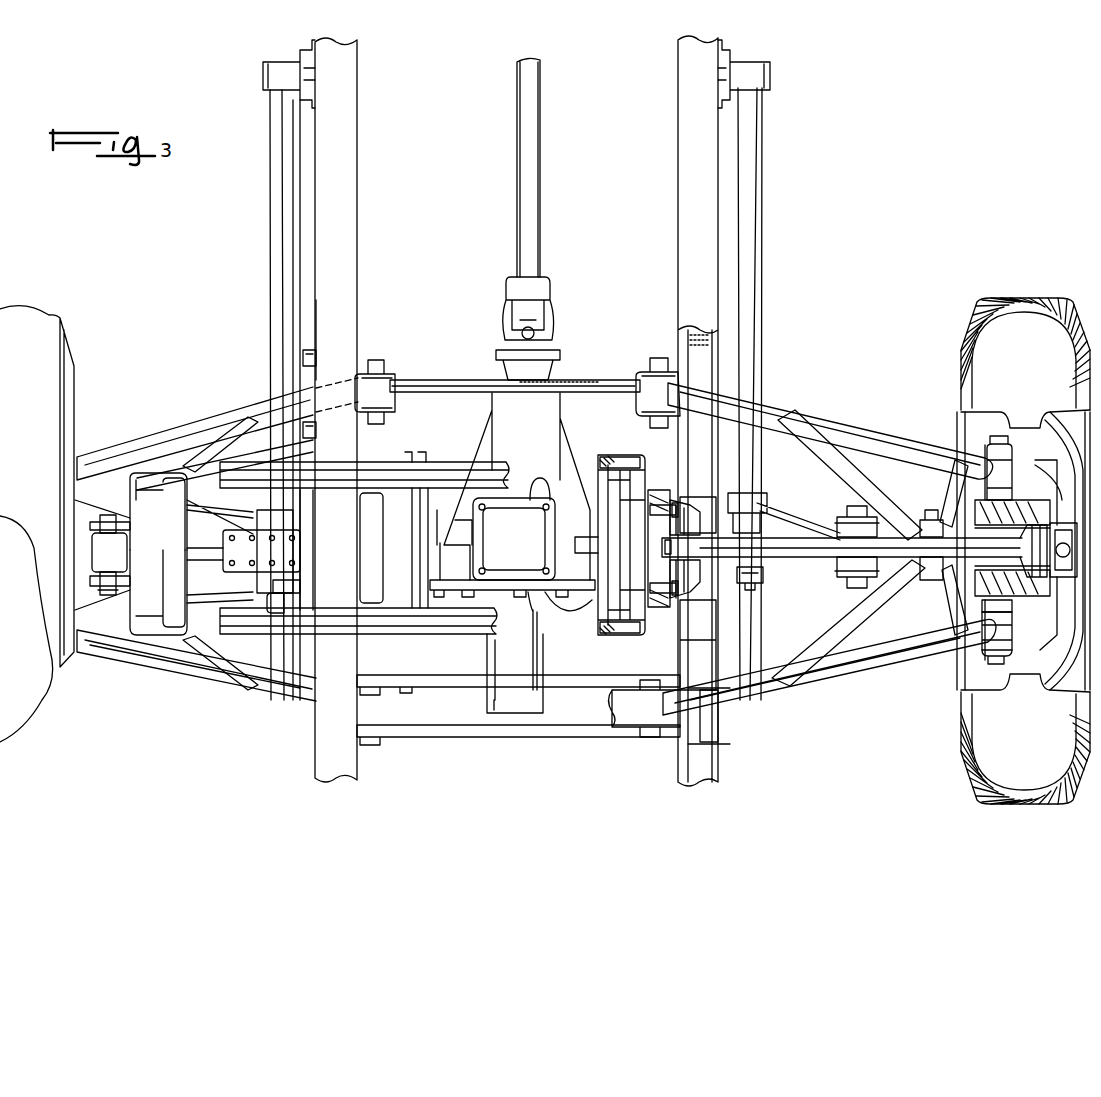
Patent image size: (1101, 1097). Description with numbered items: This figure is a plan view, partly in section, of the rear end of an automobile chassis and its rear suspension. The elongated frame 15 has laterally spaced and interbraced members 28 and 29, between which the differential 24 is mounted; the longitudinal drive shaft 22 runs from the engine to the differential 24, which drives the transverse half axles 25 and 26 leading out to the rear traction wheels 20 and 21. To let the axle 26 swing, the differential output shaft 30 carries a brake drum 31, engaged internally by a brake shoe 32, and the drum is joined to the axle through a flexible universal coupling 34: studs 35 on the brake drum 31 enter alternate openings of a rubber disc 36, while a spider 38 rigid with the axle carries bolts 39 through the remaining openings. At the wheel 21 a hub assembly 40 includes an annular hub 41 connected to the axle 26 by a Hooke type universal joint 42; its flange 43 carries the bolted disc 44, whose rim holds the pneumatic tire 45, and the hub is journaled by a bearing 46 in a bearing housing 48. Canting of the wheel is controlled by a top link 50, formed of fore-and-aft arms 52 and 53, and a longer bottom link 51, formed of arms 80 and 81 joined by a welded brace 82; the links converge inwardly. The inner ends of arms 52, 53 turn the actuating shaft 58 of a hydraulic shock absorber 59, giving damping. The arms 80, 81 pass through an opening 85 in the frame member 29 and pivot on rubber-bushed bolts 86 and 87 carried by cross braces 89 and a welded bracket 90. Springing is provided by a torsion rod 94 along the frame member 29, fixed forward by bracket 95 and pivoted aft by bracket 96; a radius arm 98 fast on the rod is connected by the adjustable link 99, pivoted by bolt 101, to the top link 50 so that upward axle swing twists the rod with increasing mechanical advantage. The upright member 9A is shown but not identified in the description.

The frame 15 is at (370, 82).
The frame member 28 is at (350, 345).
The frame member 29 is at (680, 294).
The bracket 95 is at (268, 76).
The upright strut 9A is at (270, 288).
The torsion rod 94 is at (762, 340).
The drive shaft 22 is at (540, 211).
The welded bracket 90 is at (590, 380).
The rubber-bushed bolt 87 is at (378, 386).
The differential 24 is at (492, 430).
The output shaft 30 is at (598, 545).
The brake drum 31 is at (624, 460).
The brake shoe 32 is at (642, 470).
The flexible universal coupling 34 is at (665, 490).
The studs 35 is at (678, 510).
The rubber disc 36 is at (684, 500).
The spider 38 is at (700, 570).
The bolts 39 is at (655, 600).
The half axle 26 is at (808, 558).
The bracket 96 is at (764, 572).
The radius arm 98 is at (785, 522).
The link 99 is at (850, 568).
The bolt 101 is at (858, 587).
The arm 81 is at (198, 428).
The arm 80 is at (167, 672).
The bottom link 51 is at (116, 680).
The welded brace 82 is at (238, 652).
The rear traction wheel 20 is at (57, 316).
The top link 50 is at (124, 514).
The arm 53 is at (196, 508).
The arm 52 is at (196, 598).
The half axle 25 is at (194, 566).
The hydraulic shock absorber 59 is at (300, 592).
The actuating shaft 58 is at (274, 613).
The cross braces 89 is at (590, 738).
The rubber-bushed bolt 86 is at (642, 728).
The opening 85 is at (718, 720).
The rear traction wheel 21 is at (1085, 305).
The pneumatic tire 45 is at (1005, 300).
The hub assembly 40 is at (978, 440).
The bearing housing 48 is at (1008, 480).
The bearing 46 is at (1000, 500).
The annular hub 41 is at (975, 586).
The Hooke type universal joint 42 is at (1008, 594).
The flange 43 is at (1010, 614).
The disc 44 is at (1010, 636).